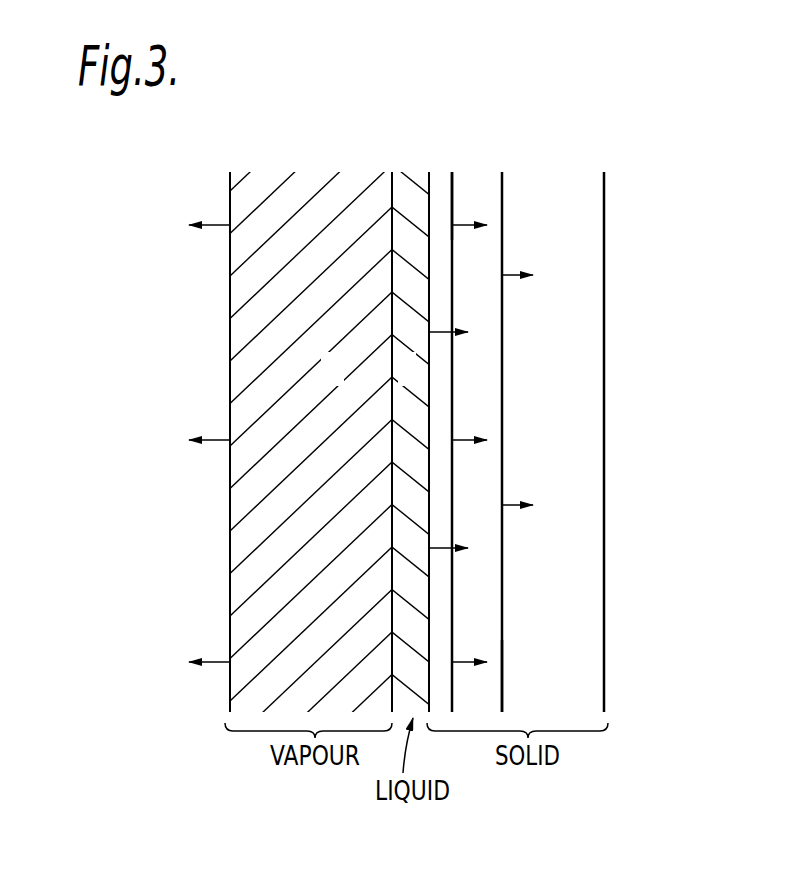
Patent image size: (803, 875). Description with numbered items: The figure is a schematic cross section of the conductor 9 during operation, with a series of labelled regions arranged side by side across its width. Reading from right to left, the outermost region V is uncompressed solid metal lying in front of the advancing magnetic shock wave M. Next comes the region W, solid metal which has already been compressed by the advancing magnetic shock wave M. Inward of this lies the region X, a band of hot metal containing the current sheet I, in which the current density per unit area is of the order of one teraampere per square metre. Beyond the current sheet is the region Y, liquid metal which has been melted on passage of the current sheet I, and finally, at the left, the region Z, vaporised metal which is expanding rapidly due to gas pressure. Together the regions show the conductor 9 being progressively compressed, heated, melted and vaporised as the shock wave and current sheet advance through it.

The conductor 9 is at (240, 158).
The current sheet I is at (440, 168).
The magnetic shock wave M is at (506, 688).
The region of vaporised metal Z is at (340, 383).
The region of liquid metal Y is at (414, 383).
The region of hot metal X is at (446, 383).
The region of compressed solid metal W is at (486, 383).
The region of uncompressed solid metal V is at (560, 383).